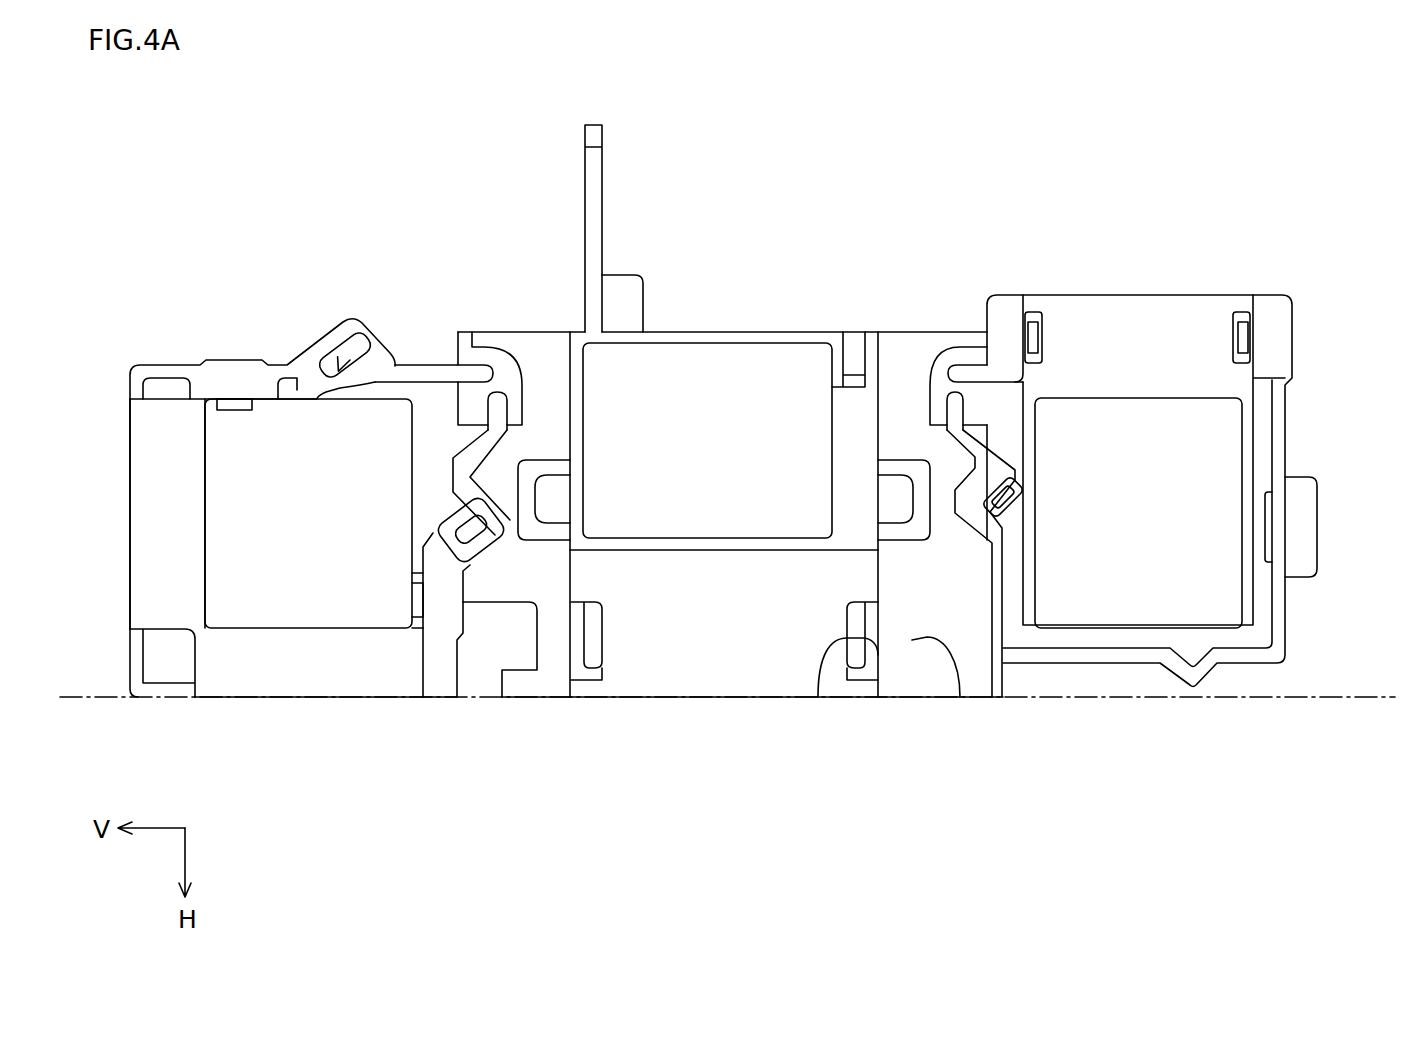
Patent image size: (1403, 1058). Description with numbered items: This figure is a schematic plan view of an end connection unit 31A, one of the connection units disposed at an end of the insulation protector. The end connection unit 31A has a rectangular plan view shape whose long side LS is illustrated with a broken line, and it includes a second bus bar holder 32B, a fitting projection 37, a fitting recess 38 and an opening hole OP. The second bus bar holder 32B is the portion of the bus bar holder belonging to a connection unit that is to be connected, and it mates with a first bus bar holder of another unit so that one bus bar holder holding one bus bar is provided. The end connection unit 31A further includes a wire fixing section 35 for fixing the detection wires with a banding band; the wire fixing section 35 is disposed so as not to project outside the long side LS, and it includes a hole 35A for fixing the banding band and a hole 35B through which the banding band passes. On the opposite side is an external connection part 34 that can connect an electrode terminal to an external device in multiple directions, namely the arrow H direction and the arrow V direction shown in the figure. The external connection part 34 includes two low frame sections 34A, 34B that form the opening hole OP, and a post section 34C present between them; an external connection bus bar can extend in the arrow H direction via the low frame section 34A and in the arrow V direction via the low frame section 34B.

The external connection part 34 is at (108, 408).
The opening hole OP is at (263, 512).
The low frame section 34B is at (158, 588).
The post section 34C is at (163, 662).
The low frame section 34A is at (303, 663).
The end connection unit 31A is at (1155, 735).
The fitting projection 37 is at (603, 192).
The fitting recess 38 is at (852, 332).
The hole 35B is at (818, 697).
The hole 35A is at (960, 697).
The wire fixing section 35 is at (968, 818).
The second bus bar holder 32B is at (1278, 342).
The long side LS is at (1325, 697).